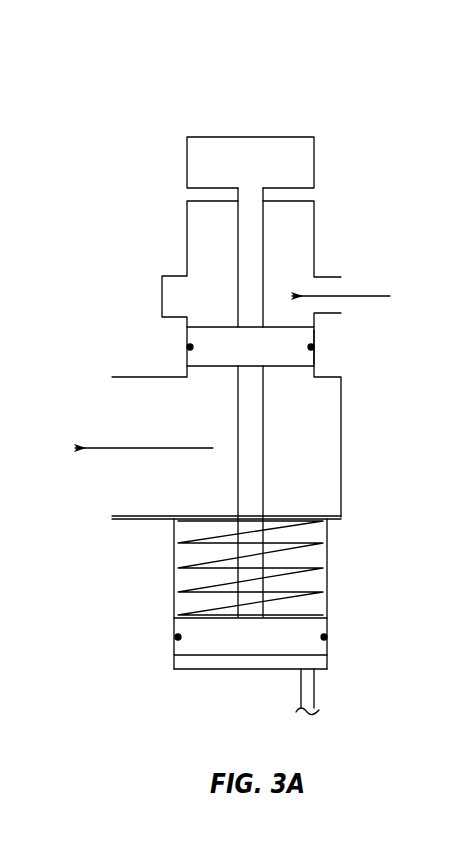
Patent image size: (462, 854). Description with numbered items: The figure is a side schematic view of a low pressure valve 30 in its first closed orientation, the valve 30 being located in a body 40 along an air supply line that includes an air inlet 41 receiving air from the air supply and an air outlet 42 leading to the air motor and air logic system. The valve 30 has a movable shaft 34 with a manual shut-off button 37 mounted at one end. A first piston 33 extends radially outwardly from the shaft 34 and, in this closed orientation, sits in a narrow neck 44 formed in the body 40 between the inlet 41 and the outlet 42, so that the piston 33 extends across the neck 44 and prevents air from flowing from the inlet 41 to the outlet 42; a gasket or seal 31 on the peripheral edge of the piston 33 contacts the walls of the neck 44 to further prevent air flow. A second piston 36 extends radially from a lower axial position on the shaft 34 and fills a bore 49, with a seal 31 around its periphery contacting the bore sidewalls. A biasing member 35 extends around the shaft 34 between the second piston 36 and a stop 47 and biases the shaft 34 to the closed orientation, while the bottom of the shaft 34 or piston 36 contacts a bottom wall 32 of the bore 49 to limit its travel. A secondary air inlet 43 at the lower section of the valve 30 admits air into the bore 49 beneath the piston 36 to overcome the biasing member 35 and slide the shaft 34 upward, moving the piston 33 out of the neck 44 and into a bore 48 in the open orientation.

The valve 30 is at (247, 125).
The body 40 is at (143, 148).
The manual shut-off button 37 is at (295, 162).
The bore 48 is at (187, 238).
The shaft 34 is at (252, 452).
The first piston 33 is at (288, 340).
The neck 44 is at (316, 357).
The seal 31 is at (190, 347).
The air inlet 41 is at (322, 285).
The air outlet 42 is at (146, 488).
The stop 47 is at (310, 515).
The bore 49 is at (174, 580).
The biasing member 35 is at (298, 562).
The second piston 36 is at (305, 636).
The bottom wall 32 is at (195, 670).
The secondary air inlet 43 is at (310, 695).